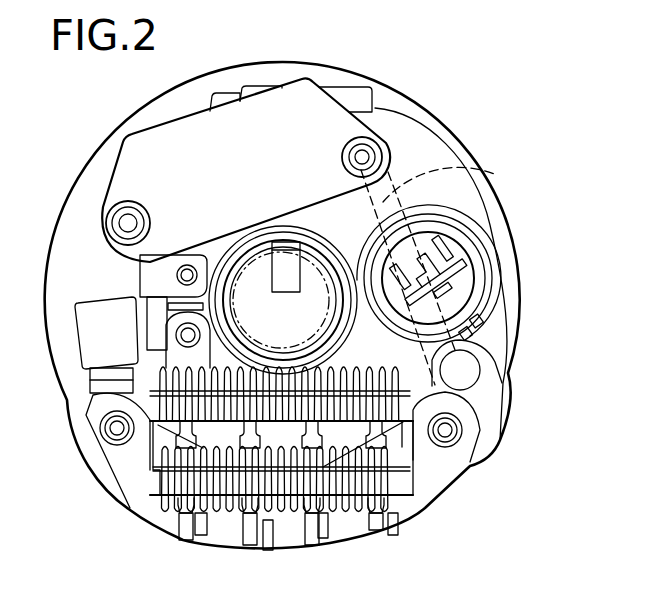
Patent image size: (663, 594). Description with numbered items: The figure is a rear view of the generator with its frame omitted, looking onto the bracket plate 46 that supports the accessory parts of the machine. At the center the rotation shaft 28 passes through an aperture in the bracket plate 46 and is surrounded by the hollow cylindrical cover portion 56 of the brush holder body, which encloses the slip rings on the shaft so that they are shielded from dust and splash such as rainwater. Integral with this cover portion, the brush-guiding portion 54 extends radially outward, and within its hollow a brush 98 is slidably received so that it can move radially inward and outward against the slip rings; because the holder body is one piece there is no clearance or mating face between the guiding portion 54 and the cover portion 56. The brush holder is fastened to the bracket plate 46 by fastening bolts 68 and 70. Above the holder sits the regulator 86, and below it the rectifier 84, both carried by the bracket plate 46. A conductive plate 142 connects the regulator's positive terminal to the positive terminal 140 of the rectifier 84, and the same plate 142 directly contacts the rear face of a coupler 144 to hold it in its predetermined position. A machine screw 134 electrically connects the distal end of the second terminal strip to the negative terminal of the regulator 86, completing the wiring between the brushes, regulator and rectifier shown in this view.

The bracket plate 46 is at (468, 166).
The regulator 86 is at (192, 128).
The fastening bolt 68 is at (370, 157).
The fastening bolt 70 is at (121, 206).
The brush-guiding portion 54 is at (300, 221).
The cylindrical cover portion 56 is at (322, 343).
The rotation shaft 28 is at (318, 262).
The brush 98 is at (285, 290).
The coupler 144 is at (475, 280).
The conductive plate 142 is at (477, 182).
The positive terminal 140 is at (478, 400).
The machine screw 134 is at (176, 278).
The rectifier 84 is at (171, 521).